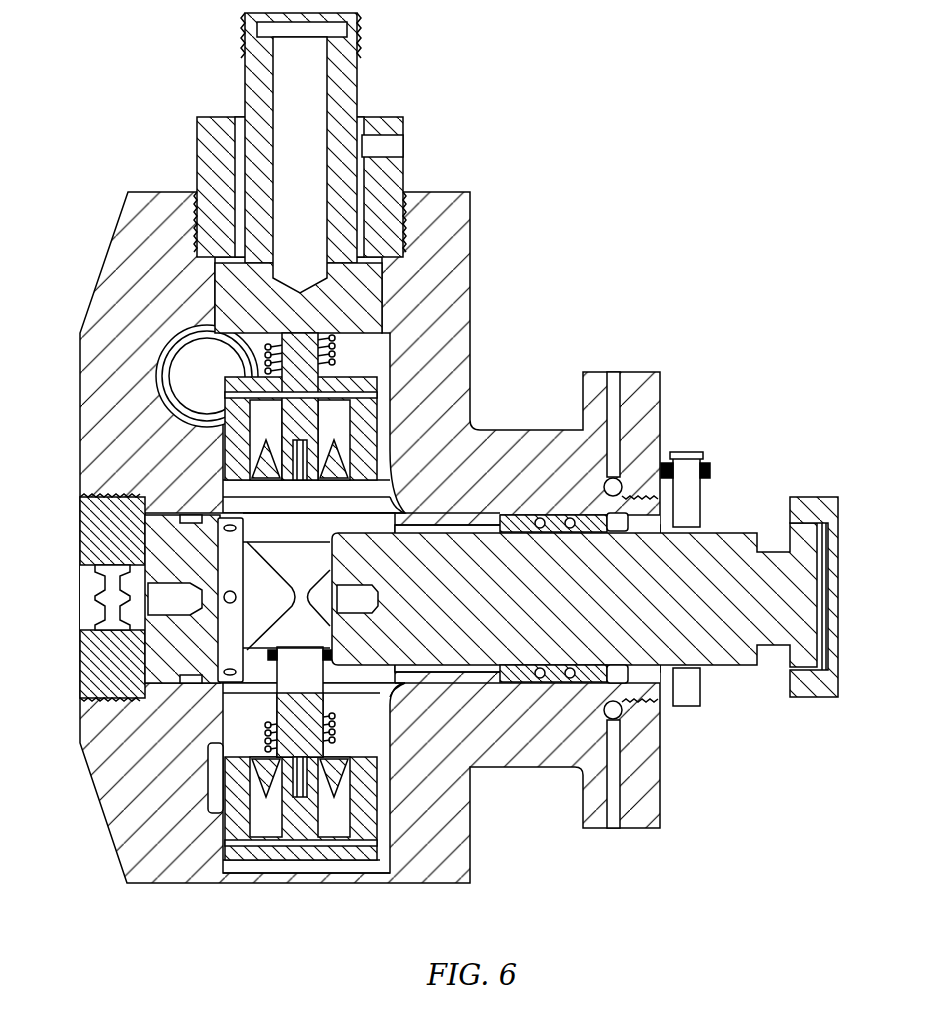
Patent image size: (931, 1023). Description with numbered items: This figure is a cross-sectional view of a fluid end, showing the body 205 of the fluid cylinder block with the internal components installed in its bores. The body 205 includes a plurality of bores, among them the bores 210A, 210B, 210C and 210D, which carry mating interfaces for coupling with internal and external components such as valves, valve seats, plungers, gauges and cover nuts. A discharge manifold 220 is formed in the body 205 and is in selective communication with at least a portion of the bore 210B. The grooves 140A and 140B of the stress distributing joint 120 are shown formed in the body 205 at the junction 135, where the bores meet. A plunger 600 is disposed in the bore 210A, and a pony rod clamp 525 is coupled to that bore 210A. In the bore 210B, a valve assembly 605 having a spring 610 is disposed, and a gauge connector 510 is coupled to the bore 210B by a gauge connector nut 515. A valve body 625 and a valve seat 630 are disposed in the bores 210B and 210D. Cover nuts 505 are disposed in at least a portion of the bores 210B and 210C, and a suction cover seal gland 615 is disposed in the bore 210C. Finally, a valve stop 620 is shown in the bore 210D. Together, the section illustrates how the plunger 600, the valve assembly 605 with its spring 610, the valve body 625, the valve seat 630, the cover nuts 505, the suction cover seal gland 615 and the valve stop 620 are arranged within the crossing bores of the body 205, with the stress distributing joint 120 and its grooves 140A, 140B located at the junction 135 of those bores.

The body 205 is at (128, 192).
The gauge connector 510 is at (357, 78).
The gauge connector nut 515 is at (403, 125).
The spring 610 is at (357, 340).
The valve assembly 605 is at (315, 580).
The discharge manifold 220 is at (190, 370).
The valve body 625 is at (240, 392).
The valve seat 630 is at (230, 417).
The bore 210B is at (223, 462).
The groove 140A is at (400, 503).
The stress distributing joint 120 is at (400, 507).
The bore 210A is at (457, 523).
The cover nut 505 is at (107, 525).
The junction 135 is at (317, 575).
The suction cover seal gland 615 is at (125, 660).
The bore 210C is at (177, 687).
The valve stop 620 is at (188, 806).
The groove 140B is at (395, 696).
The bore 210D is at (372, 847).
The pony rod clamp 525 is at (818, 497).
The plunger 600 is at (723, 658).